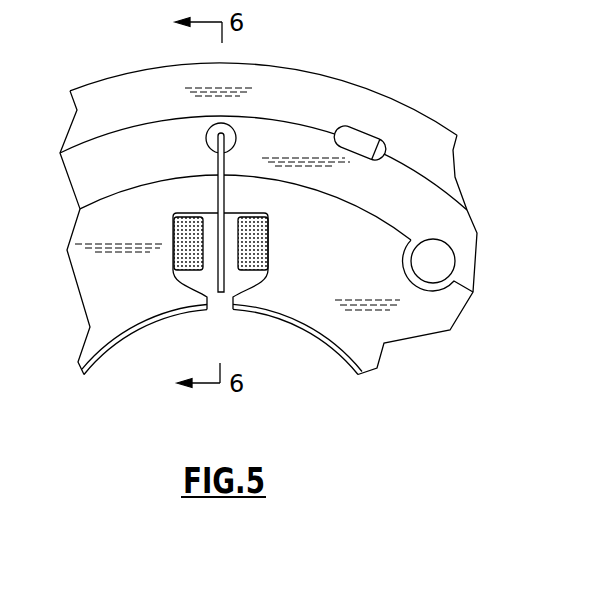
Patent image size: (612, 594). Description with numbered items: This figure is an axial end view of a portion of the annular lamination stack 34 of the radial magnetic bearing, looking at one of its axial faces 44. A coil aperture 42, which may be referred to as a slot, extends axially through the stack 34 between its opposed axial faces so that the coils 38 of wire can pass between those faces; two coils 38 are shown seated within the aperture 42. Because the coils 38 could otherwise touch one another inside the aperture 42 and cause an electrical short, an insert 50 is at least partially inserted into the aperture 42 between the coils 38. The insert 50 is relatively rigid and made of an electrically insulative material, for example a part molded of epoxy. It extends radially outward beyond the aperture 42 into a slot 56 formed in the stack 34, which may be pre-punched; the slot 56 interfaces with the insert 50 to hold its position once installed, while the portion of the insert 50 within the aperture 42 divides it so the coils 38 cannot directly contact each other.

The annular lamination stack 34 is at (290, 106).
The coils 38 is at (183, 256).
The coil aperture 42 is at (208, 278).
The axial face 44 is at (308, 142).
The insert 50 is at (216, 165).
The slot 56 is at (226, 123).